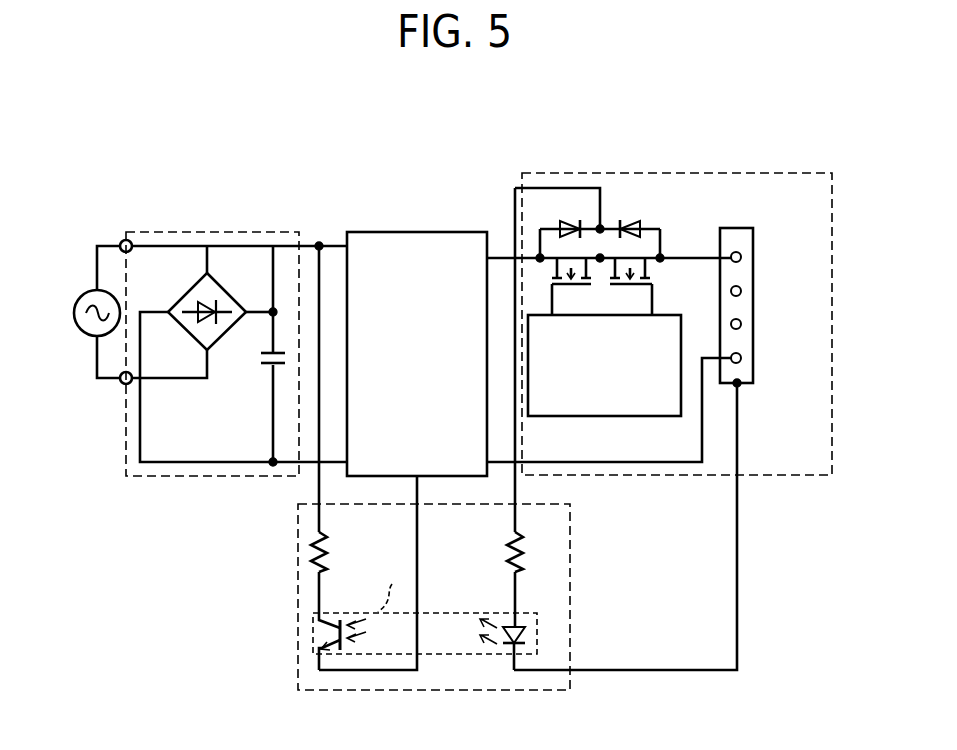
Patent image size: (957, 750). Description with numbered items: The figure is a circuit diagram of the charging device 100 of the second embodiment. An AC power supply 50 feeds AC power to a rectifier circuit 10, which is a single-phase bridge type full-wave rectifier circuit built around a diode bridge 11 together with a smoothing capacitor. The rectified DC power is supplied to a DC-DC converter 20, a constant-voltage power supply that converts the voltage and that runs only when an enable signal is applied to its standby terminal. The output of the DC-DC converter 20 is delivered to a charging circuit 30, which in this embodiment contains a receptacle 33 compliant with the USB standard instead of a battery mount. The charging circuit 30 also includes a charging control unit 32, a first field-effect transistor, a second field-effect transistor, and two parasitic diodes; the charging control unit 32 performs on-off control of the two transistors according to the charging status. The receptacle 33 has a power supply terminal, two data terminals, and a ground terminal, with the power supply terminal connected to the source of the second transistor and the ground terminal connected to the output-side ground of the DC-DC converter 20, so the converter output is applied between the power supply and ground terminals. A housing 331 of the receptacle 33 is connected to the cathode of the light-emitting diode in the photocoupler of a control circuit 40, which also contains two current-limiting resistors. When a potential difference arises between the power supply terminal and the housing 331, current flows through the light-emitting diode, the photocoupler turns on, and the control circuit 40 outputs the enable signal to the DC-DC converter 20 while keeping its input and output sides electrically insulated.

The charging device 100 is at (488, 145).
The rectifier circuit 10 is at (262, 232).
The diode bridge 11 is at (227, 291).
The DC-DC converter 20 is at (417, 232).
The charging circuit 30 is at (752, 173).
The charging control unit 32 is at (592, 416).
The receptacle 33 is at (728, 225).
The housing 331 is at (757, 381).
The control circuit 40 is at (572, 524).
The AC power supply 50 is at (96, 291).